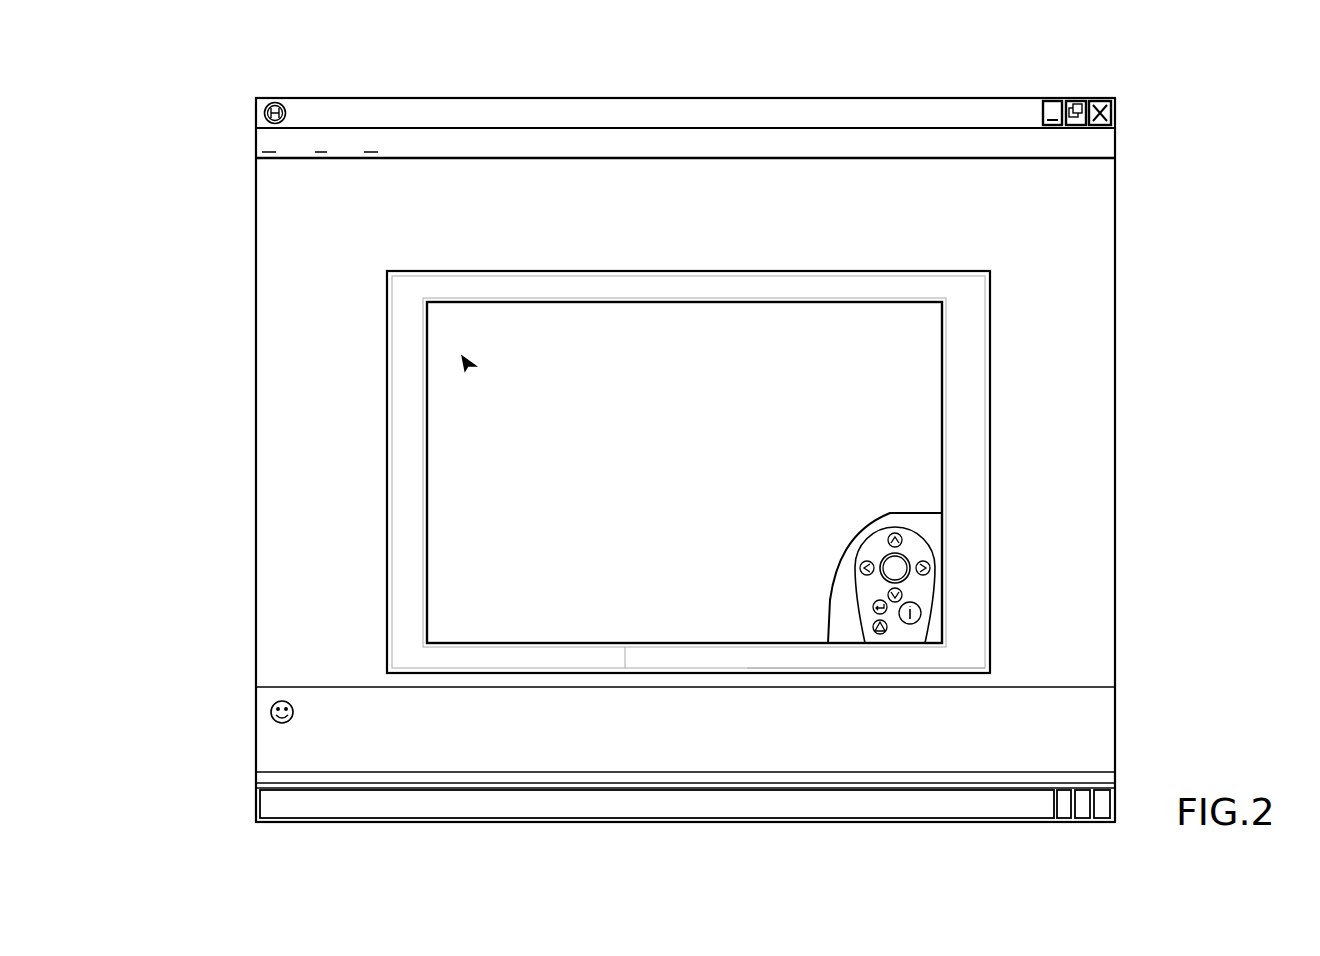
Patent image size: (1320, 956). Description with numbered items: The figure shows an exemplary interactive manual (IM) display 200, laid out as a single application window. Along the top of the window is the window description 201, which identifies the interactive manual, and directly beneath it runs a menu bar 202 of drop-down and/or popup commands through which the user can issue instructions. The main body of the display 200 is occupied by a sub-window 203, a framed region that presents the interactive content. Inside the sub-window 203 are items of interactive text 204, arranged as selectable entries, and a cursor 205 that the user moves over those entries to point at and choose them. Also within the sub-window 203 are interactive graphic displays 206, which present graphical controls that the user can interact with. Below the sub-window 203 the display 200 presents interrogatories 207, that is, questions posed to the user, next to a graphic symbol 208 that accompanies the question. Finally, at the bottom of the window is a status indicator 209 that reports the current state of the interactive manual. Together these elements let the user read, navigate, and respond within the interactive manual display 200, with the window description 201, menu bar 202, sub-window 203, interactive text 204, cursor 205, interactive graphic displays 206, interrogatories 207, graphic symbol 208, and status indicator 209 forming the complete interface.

The interactive manual display 200 is at (207, 90).
The window description 201 is at (303, 98).
The menu bar 202 is at (257, 149).
The sub-window 203 is at (963, 371).
The interactive text 204 is at (448, 384).
The cursor 205 is at (463, 359).
The interactive graphic displays 206 is at (930, 568).
The interrogatories 207 is at (362, 692).
The graphic symbol 208 is at (270, 711).
The status indicator 209 is at (257, 822).